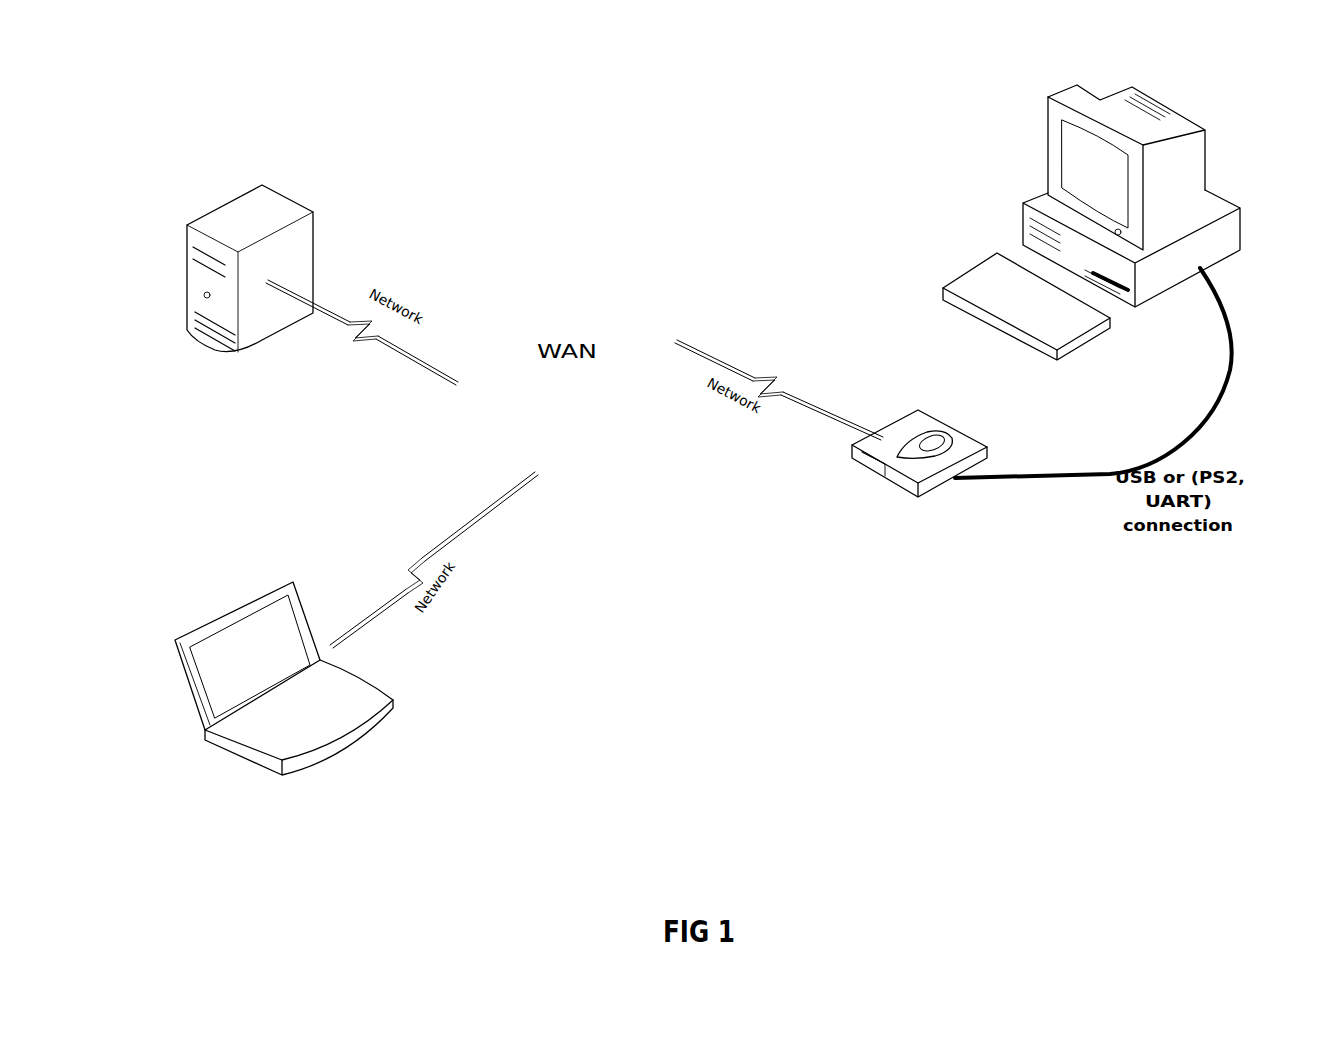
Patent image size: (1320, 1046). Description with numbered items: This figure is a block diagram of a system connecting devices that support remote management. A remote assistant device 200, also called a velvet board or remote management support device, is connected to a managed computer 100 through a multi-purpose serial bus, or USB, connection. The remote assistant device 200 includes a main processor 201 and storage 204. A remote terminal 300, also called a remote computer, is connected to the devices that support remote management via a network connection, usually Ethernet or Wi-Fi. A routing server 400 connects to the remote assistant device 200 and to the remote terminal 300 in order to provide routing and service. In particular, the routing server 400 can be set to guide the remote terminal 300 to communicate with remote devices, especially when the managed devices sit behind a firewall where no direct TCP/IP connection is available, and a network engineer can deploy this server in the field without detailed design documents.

The managed computer 100 is at (1091, 236).
The remote assistant device 200 is at (872, 460).
The main processor of remote assistant device 201 is at (912, 433).
The storage of remote assistant device 204 is at (865, 472).
The remote terminal 300 is at (275, 689).
The routing server 400 is at (247, 283).